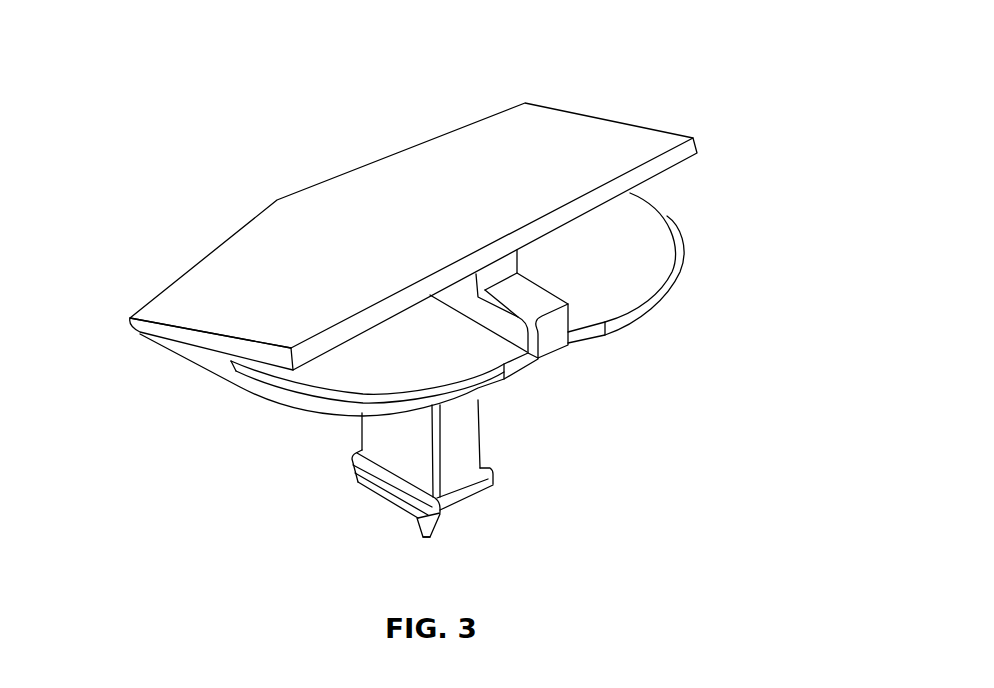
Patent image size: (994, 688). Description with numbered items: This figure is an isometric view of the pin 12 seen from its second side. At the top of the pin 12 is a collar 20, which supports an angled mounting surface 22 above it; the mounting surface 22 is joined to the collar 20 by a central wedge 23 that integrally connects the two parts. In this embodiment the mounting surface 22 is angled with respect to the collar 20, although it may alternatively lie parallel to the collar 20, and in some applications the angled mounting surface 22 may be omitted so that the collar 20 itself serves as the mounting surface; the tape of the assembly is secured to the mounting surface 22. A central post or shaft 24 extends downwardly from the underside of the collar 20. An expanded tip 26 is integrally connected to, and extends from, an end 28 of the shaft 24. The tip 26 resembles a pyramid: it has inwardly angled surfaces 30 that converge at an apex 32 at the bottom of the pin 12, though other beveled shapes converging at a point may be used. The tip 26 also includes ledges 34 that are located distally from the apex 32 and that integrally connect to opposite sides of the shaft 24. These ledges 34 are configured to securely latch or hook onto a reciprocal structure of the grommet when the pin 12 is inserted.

The pin 12 is at (160, 100).
The collar 20 is at (678, 281).
The mounting surface 22 is at (510, 135).
The central wedge 23 is at (525, 296).
The shaft 24 is at (388, 442).
The expanded tip 26 is at (395, 527).
The end of the shaft 28 is at (457, 462).
The inwardly angled surfaces 30 is at (381, 507).
The apex 32 is at (427, 539).
The ledges 34 is at (352, 468).